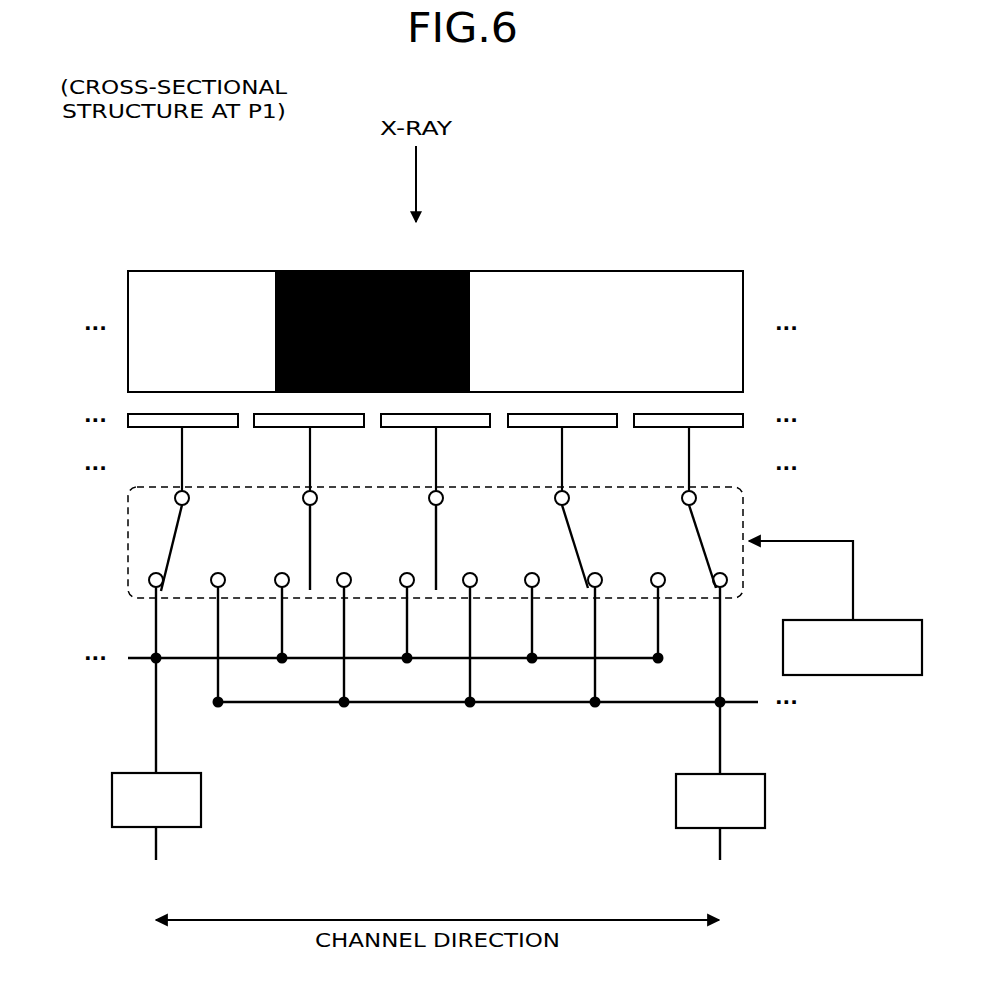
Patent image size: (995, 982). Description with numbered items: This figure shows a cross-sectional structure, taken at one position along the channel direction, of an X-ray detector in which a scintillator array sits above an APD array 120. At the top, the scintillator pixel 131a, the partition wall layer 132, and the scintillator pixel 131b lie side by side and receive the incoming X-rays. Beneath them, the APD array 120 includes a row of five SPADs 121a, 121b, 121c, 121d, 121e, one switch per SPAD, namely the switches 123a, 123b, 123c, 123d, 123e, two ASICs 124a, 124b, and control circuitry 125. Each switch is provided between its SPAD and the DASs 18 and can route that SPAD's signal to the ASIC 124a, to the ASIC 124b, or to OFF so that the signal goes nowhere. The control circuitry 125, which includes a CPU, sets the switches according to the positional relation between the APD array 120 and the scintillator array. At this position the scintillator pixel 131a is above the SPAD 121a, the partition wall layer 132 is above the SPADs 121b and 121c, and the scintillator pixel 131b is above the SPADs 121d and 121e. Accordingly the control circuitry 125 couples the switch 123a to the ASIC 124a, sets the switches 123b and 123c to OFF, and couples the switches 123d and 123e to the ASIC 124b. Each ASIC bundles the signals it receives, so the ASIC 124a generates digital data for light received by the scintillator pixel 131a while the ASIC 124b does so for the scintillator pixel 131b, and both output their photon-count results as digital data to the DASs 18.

The DAS 18 is at (439, 859).
The APD array 120 is at (62, 410).
The SPAD 121a is at (214, 427).
The SPAD 121b is at (340, 427).
The SPAD 121c is at (468, 427).
The SPAD 121d is at (594, 427).
The SPAD 121e is at (720, 427).
The switch 123a is at (176, 540).
The switch 123b is at (310, 540).
The switch 123c is at (436, 540).
The switch 123d is at (574, 540).
The switch 123e is at (700, 525).
The ASIC 124a is at (201, 798).
The ASIC 124b is at (765, 798).
The control circuitry 125 is at (885, 620).
The scintillator pixel 131a is at (197, 271).
The scintillator pixel 131b is at (628, 271).
The partition wall layer 132 is at (340, 271).